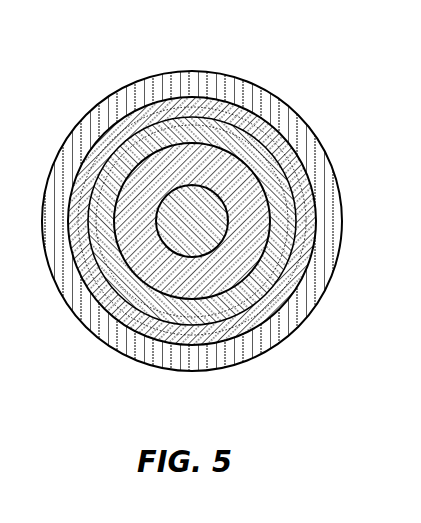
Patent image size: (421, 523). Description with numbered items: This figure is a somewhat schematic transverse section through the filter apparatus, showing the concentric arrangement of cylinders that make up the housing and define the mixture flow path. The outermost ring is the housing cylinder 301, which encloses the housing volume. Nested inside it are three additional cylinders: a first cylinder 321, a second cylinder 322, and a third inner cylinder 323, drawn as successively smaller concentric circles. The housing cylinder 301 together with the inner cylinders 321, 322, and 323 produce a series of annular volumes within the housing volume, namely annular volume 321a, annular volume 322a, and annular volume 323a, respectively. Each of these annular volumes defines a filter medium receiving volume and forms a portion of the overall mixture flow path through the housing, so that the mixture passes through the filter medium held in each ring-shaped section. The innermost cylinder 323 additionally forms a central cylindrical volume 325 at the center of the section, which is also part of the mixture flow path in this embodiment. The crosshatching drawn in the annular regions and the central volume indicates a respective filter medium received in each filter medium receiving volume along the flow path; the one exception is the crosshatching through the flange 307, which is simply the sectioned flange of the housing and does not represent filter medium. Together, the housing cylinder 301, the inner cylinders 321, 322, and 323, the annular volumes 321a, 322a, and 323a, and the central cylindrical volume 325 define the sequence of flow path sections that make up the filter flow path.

The housing cylinder 301 is at (270, 84).
The flange 307 is at (285, 130).
The first cylinder 321 is at (294, 188).
The annular volume 321a is at (300, 152).
The second cylinder 322 is at (293, 267).
The annular volume 322a is at (277, 240).
The third inner cylinder 323 is at (250, 297).
The annular volume 323a is at (112, 278).
The core 325 is at (192, 216).